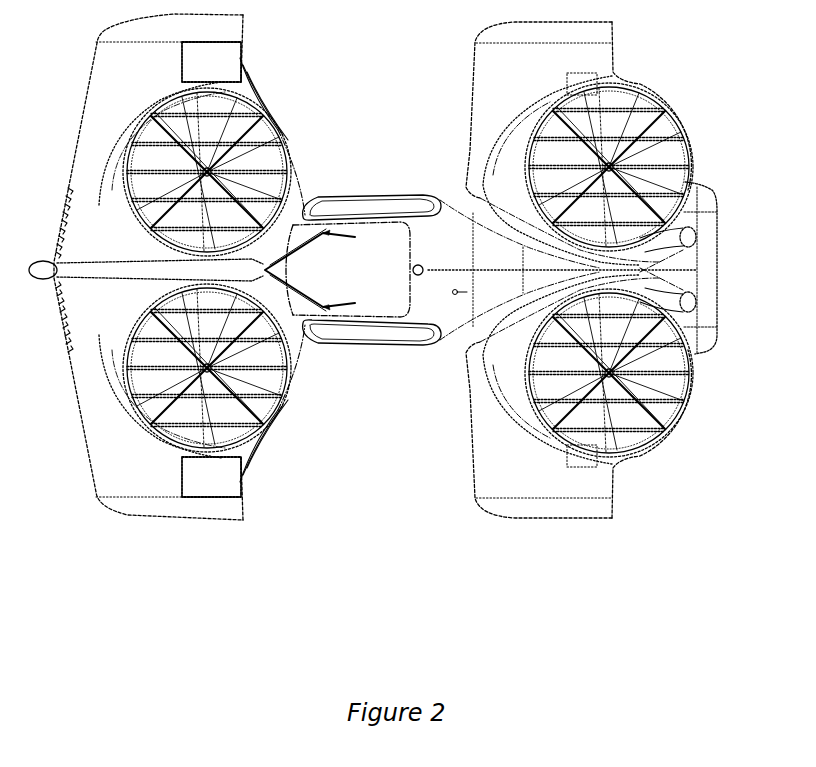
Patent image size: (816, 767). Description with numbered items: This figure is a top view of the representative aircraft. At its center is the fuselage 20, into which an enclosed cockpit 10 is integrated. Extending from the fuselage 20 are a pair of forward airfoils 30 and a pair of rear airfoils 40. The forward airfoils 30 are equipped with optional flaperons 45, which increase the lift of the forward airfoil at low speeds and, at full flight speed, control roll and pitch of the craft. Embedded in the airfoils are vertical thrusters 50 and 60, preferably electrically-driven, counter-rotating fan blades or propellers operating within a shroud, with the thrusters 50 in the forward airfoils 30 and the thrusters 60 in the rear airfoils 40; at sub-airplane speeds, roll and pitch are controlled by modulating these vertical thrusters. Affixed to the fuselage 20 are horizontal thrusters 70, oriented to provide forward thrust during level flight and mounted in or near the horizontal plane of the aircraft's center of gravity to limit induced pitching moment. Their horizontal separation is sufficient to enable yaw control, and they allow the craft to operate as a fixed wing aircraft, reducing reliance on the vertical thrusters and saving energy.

The enclosed cockpit 10 is at (348, 195).
The fuselage 20 is at (452, 195).
The forward airfoils 30 is at (95, 85).
The rear airfoils 40 is at (476, 63).
The flaperons 45 is at (240, 60).
The vertical thrusters 50 is at (258, 120).
The vertical thrusters 60 is at (665, 130).
The horizontal thrusters 70 is at (700, 247).